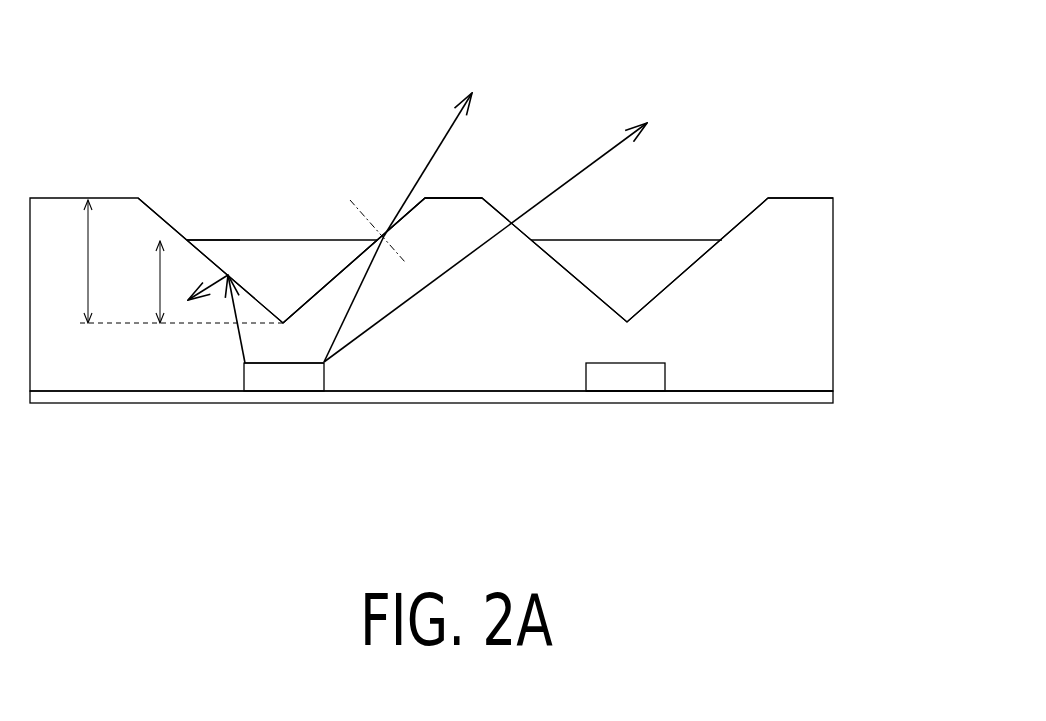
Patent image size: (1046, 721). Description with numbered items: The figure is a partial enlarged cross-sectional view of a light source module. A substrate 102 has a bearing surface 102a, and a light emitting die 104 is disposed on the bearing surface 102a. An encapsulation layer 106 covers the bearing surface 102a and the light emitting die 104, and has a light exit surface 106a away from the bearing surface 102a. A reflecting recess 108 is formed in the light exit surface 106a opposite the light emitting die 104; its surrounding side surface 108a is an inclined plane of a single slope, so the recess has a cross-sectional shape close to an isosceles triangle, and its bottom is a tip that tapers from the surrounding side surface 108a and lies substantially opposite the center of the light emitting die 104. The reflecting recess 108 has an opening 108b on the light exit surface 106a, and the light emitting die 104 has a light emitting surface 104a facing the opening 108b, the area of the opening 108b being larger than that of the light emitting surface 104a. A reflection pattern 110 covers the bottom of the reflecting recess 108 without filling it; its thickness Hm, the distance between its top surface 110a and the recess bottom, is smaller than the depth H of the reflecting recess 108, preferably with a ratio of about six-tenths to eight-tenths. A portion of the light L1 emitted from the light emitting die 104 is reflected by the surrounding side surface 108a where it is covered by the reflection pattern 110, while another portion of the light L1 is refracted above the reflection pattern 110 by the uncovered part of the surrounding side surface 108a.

The substrate 102 is at (710, 397).
The bearing surface 102a is at (767, 390).
The light emitting die 104 is at (263, 378).
The light emitting surface 104a is at (302, 365).
The encapsulation layer 106 is at (810, 270).
The light exit surface 106a is at (793, 199).
The reflecting recess 108 is at (172, 188).
The surrounding side surface 108a is at (400, 210).
The opening 108b is at (427, 198).
The reflection pattern 110 is at (290, 247).
The top surface 110a is at (227, 240).
The light L1 is at (443, 140).
The depth of the reflecting recess H is at (169, 261).
The thickness of the reflection pattern Hm is at (137, 282).